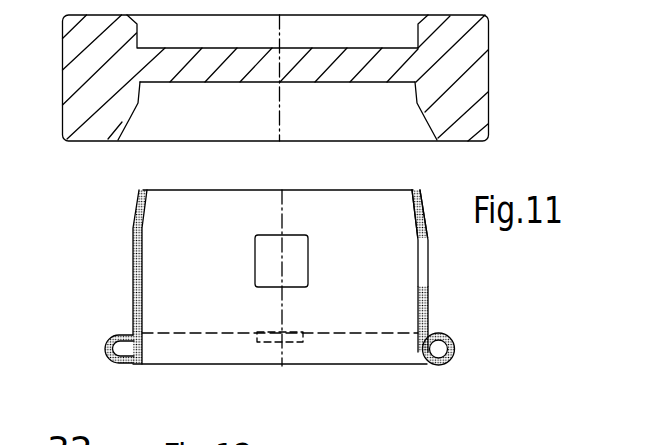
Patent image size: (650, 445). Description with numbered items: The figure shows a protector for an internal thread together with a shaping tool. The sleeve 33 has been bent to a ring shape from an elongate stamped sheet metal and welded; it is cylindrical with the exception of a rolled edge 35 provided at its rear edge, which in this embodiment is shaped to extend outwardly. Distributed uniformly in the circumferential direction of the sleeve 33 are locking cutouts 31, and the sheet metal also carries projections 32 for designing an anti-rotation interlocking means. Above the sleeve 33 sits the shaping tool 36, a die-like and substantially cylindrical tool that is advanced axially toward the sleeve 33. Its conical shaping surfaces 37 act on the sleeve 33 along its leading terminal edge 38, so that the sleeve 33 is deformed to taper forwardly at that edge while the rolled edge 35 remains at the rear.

The locking cutouts 31 is at (417, 258).
The projections 32 is at (423, 357).
The sleeve 33 is at (107, 281).
The rolled edge 35 is at (444, 367).
The shaping tool 36 is at (94, 161).
The conical shaping surfaces 37 is at (417, 93).
The leading terminal edge 38 is at (222, 180).